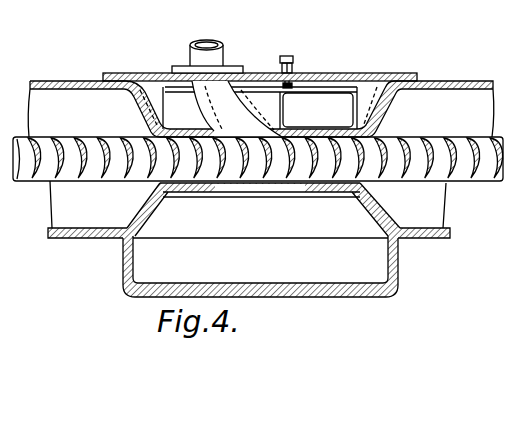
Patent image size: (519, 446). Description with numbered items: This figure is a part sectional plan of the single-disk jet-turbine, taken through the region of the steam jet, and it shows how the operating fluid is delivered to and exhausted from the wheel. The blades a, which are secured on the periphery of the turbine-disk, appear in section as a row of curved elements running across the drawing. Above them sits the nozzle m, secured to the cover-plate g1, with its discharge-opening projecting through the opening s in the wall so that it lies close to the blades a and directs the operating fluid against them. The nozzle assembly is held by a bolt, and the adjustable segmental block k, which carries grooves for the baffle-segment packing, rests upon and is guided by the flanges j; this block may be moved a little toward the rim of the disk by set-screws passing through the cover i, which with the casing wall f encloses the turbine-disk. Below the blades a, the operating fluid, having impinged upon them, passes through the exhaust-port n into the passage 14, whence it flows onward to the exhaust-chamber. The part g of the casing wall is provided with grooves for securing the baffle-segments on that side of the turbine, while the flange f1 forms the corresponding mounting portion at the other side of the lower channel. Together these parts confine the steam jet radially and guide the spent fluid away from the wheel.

The cover i is at (450, 70).
The flanges j is at (148, 92).
The cover-plate g1 is at (318, 74).
The nozzle m is at (232, 84).
The adjustable segmental block k is at (293, 94).
The opening s is at (282, 130).
The blades a is at (95, 141).
The part of casing-wall g is at (321, 197).
The exhaust-port n is at (255, 193).
The casing wall f is at (84, 234).
The flange f1 is at (424, 234).
The passage 14 is at (268, 266).